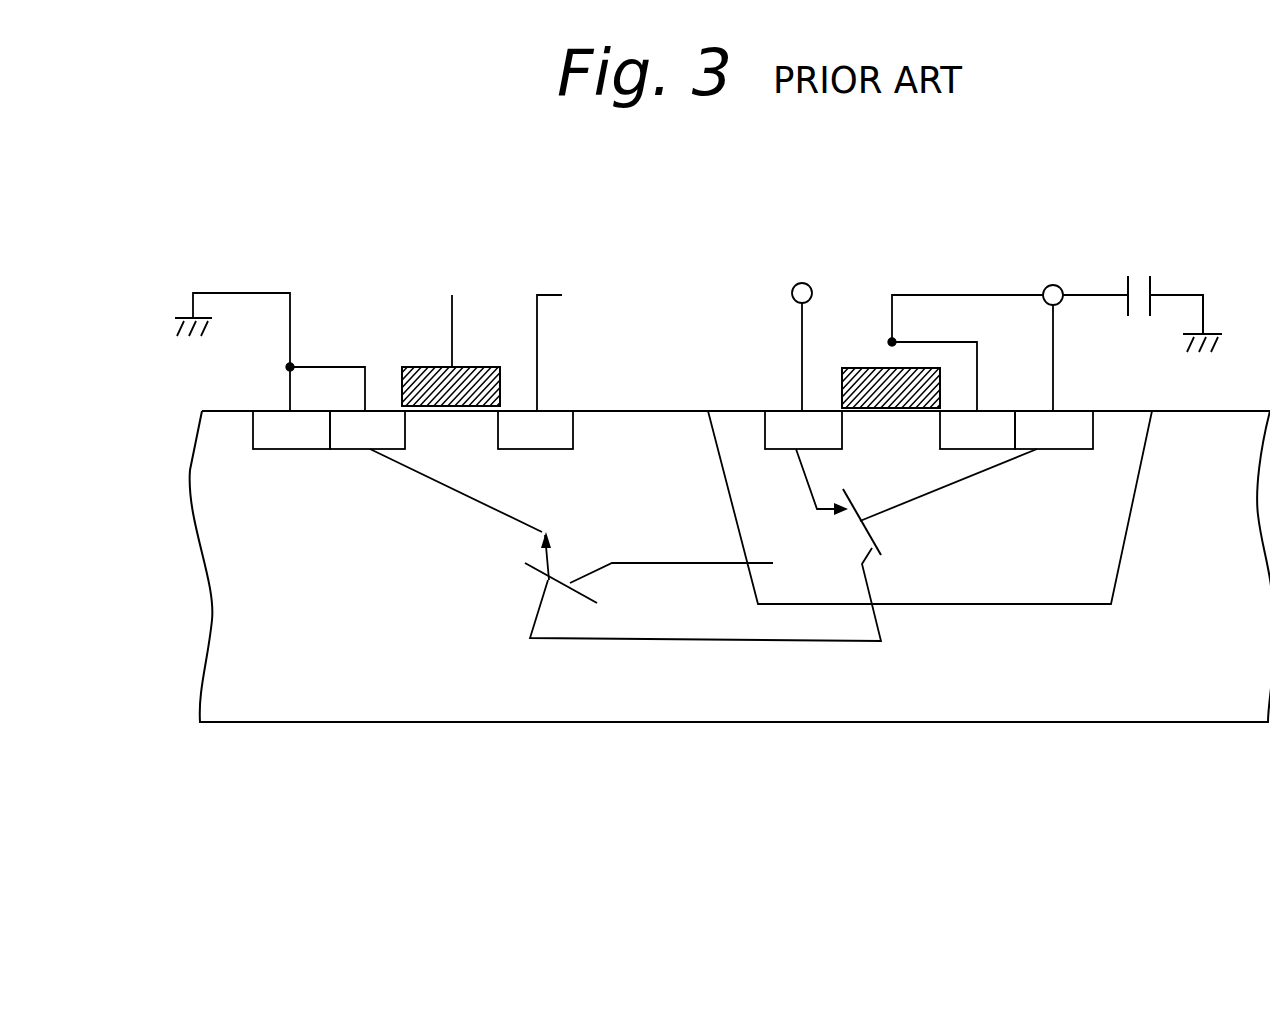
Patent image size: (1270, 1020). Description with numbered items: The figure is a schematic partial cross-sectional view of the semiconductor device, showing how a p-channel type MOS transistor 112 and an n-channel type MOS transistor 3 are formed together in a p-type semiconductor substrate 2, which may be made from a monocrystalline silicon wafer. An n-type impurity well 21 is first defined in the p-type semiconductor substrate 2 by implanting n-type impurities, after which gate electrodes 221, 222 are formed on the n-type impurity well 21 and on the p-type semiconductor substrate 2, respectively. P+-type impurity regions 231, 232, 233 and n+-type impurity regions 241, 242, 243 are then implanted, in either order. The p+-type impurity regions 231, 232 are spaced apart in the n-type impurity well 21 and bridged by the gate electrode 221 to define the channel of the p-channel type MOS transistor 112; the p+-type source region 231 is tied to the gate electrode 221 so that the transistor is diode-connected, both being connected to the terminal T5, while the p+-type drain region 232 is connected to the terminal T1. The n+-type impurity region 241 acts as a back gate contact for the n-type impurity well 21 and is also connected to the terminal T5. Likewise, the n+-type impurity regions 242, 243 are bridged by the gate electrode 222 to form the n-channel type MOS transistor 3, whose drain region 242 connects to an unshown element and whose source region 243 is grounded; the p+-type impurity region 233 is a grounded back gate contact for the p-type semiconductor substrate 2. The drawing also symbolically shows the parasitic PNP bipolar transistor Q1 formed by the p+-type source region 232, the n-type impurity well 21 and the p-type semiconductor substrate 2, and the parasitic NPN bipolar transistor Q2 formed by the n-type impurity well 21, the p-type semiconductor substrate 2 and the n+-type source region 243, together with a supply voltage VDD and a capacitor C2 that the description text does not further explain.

The p-type semiconductor substrate 2 is at (1158, 738).
The n-type impurity well 21 is at (1113, 542).
The n-channel type MOS transistor 3 is at (419, 336).
The gate electrode 221 is at (857, 367).
The gate electrode 222 is at (470, 366).
The p+-type impurity region 231 is at (990, 410).
The p+-type impurity region 232 is at (780, 411).
The p+-type impurity region 233 is at (272, 410).
The n+-type impurity region 241 is at (1073, 410).
The n+-type impurity region 242 is at (560, 410).
The n+-type impurity region 243 is at (385, 408).
The p-channel type MOS transistor 112 is at (877, 340).
The terminal T1 is at (792, 289).
The terminal T5 is at (1050, 285).
The capacitor C2 is at (1153, 285).
The parasitic PNP bipolar transistor Q1 is at (900, 542).
The parasitic NPN bipolar transistor Q2 is at (522, 586).
The power supply voltage VDD is at (813, 263).